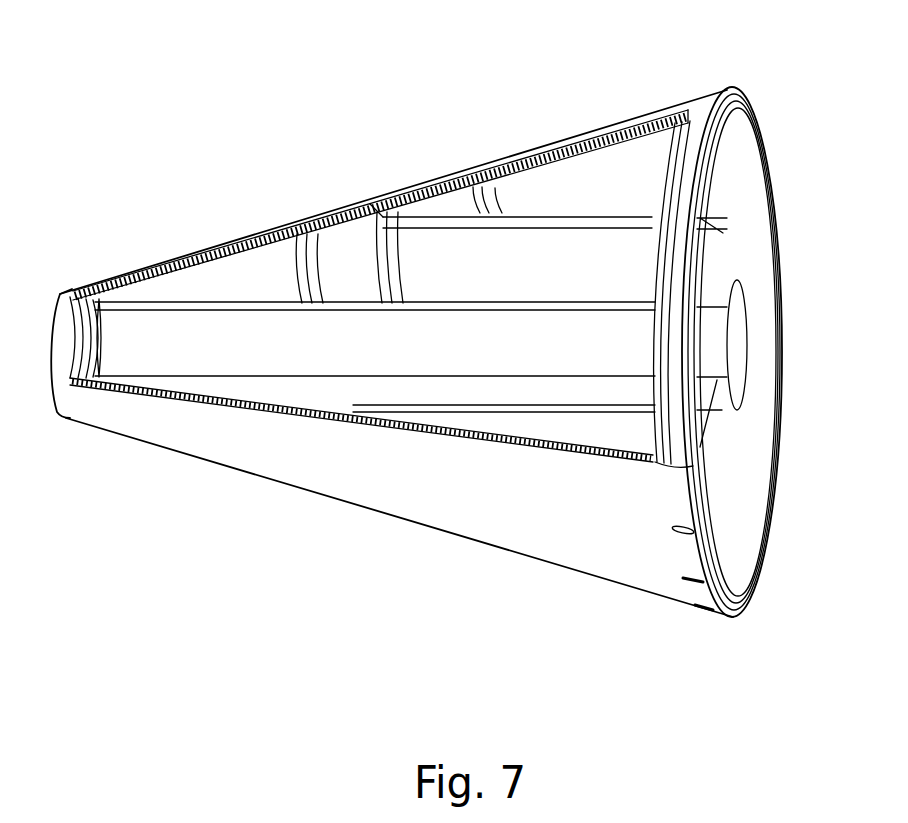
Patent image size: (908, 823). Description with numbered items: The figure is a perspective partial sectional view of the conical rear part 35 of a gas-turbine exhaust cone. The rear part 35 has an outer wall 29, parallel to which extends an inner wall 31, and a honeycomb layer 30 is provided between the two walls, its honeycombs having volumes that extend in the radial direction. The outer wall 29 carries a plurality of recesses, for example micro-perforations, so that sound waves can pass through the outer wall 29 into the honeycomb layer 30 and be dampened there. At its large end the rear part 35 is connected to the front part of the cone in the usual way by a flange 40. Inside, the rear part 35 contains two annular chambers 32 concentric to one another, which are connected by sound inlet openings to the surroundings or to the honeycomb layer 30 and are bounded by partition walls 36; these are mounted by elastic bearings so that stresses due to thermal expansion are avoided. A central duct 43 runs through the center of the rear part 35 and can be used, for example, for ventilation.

The outer wall 29 is at (200, 437).
The honeycomb layer 30 is at (147, 267).
The inner wall 31 is at (574, 166).
The annular chambers 32 is at (643, 180).
The rear part 35 is at (630, 611).
The partition walls 36 is at (643, 223).
The flange 40 is at (747, 93).
The central duct 43 is at (140, 347).